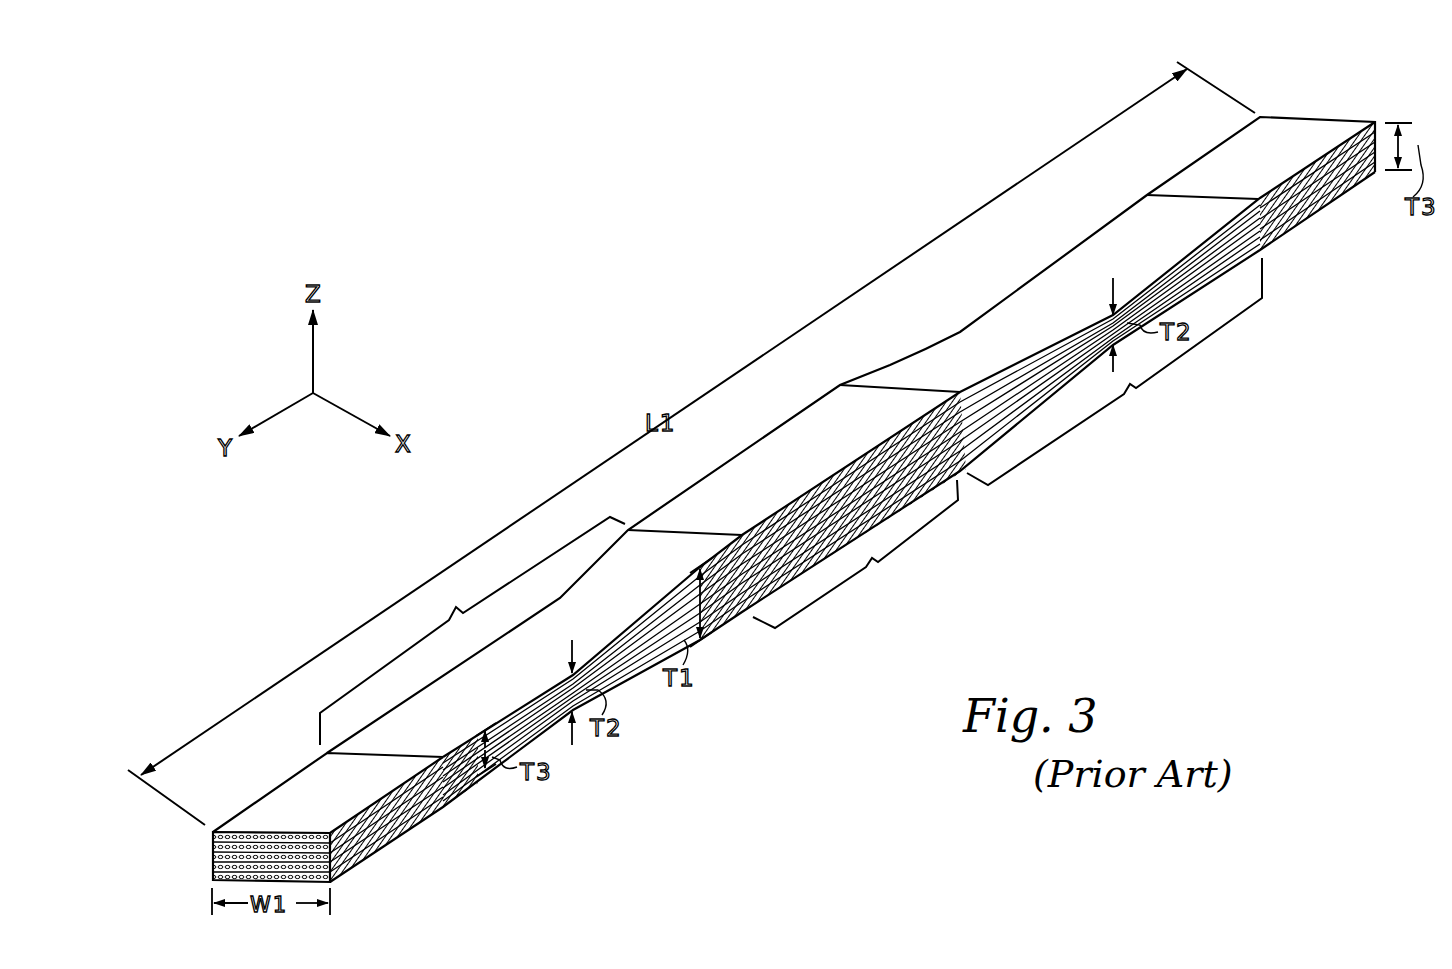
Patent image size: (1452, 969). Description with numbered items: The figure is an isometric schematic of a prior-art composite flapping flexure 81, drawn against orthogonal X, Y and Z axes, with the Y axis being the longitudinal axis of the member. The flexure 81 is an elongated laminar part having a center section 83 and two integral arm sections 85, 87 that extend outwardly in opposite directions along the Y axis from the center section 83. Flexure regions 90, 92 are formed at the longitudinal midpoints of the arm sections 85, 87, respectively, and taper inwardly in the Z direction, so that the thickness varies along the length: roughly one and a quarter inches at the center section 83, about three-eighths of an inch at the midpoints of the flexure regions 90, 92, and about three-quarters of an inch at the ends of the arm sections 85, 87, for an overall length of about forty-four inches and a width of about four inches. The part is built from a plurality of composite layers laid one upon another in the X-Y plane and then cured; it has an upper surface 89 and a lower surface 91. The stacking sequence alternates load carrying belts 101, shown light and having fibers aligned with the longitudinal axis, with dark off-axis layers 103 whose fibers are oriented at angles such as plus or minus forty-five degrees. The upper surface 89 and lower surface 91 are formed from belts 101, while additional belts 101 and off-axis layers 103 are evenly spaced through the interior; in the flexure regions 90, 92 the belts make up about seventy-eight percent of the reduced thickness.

The prior-art composite flapping flexure 81 is at (759, 300).
The center section 83 is at (855, 554).
The arm section 85 is at (534, 749).
The arm section 87 is at (1296, 233).
The upper surface 89 is at (480, 697).
The flexure region 90 is at (472, 631).
The lower surface 91 is at (624, 677).
The flexure region 92 is at (1114, 371).
The belts 101 is at (760, 435).
The off-axis layers 103 is at (913, 498).